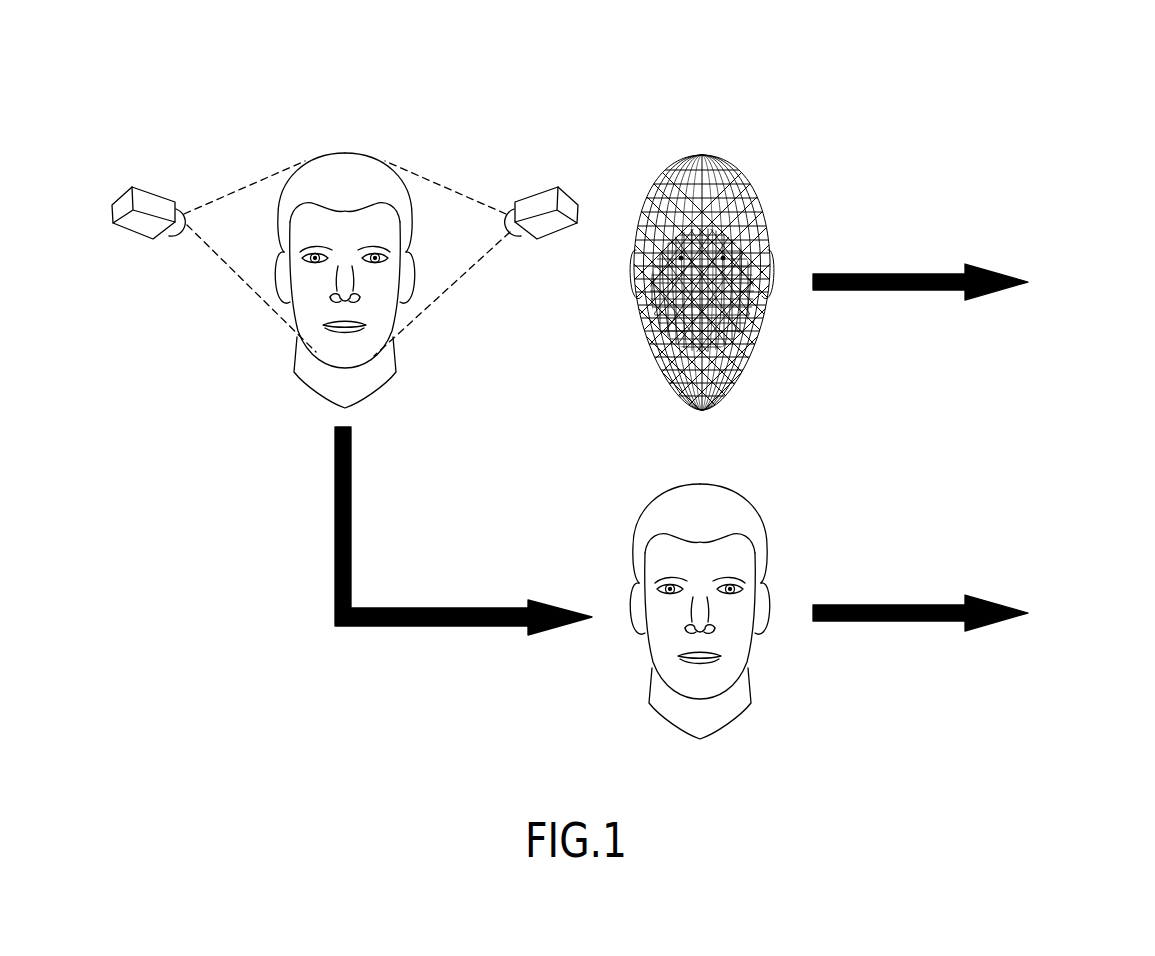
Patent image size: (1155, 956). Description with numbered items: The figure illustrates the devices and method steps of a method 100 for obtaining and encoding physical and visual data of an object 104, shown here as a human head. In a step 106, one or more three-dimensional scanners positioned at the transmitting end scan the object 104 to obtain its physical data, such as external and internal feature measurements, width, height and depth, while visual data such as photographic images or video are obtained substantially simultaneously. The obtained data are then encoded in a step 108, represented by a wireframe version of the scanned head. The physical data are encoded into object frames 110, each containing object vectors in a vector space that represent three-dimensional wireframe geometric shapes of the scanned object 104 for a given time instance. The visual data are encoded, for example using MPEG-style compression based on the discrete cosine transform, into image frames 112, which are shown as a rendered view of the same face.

The method for transmitting physical and visual data 100 is at (1003, 80).
The object 104 is at (341, 152).
The scanning step 106 is at (391, 114).
The encoding step 108 is at (735, 114).
The object frame 110 is at (988, 296).
The image frame 112 is at (988, 627).